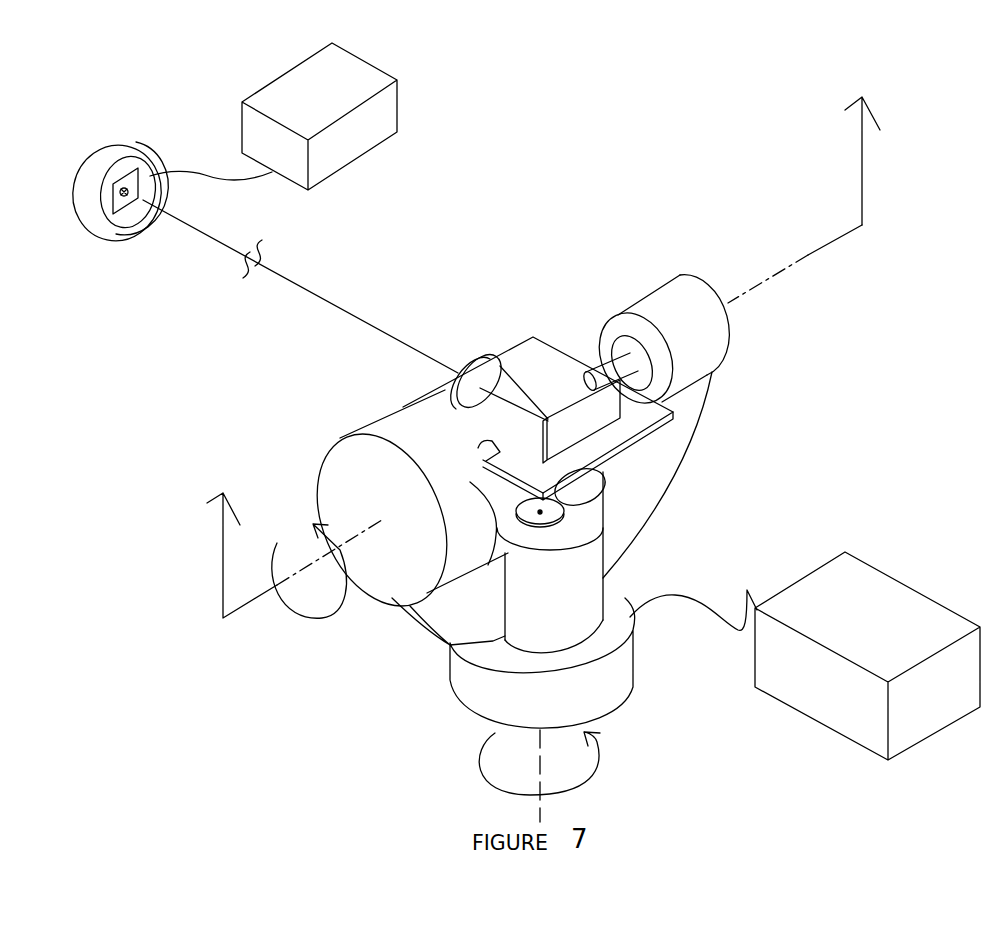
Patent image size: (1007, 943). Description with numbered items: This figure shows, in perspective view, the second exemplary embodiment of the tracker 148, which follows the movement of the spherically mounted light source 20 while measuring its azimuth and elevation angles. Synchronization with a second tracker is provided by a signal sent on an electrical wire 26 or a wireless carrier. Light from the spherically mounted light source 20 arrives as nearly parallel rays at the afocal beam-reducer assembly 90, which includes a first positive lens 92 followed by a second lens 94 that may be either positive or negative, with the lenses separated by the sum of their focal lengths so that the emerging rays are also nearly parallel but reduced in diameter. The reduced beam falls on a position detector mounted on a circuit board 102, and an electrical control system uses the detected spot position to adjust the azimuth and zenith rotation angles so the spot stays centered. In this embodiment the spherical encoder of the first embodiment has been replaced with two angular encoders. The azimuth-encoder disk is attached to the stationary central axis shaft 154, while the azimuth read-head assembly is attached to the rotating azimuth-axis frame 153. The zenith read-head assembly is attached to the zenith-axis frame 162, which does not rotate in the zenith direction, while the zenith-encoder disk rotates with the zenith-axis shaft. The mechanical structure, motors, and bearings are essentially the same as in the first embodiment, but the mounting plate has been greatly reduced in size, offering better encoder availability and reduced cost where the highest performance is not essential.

The spherically mounted light source 20 is at (96, 146).
The tracker 148 is at (650, 147).
The zenith-axis frame 162 is at (735, 333).
The circuit board 102 is at (673, 412).
The second lens 94 is at (552, 415).
The first positive lens 92 is at (479, 355).
The afocal beam-reducer assembly 90 is at (550, 280).
The electrical wire 26 is at (600, 489).
The stationary central axis shaft 154 is at (563, 518).
The rotating azimuth-axis frame 153 is at (577, 575).